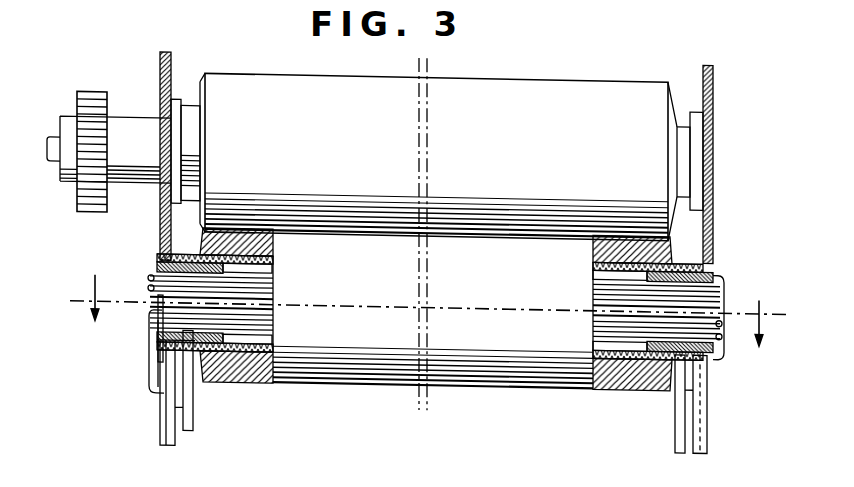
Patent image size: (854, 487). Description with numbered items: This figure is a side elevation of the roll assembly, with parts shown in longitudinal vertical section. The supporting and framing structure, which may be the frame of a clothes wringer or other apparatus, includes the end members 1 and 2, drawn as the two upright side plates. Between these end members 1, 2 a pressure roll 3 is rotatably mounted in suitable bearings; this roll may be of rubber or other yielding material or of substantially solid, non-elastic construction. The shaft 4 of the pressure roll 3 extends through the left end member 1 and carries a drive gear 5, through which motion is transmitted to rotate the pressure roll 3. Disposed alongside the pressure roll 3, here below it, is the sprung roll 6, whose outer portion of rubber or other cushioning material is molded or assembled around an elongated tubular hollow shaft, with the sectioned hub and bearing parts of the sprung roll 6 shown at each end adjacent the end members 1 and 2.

The supporting frame end member 1 is at (160, 222).
The supporting frame end member 2 is at (712, 230).
The pressure roll 3 is at (393, 108).
The shaft 4 is at (187, 117).
The drive gear 5 is at (85, 190).
The sprung roll 6 is at (370, 375).